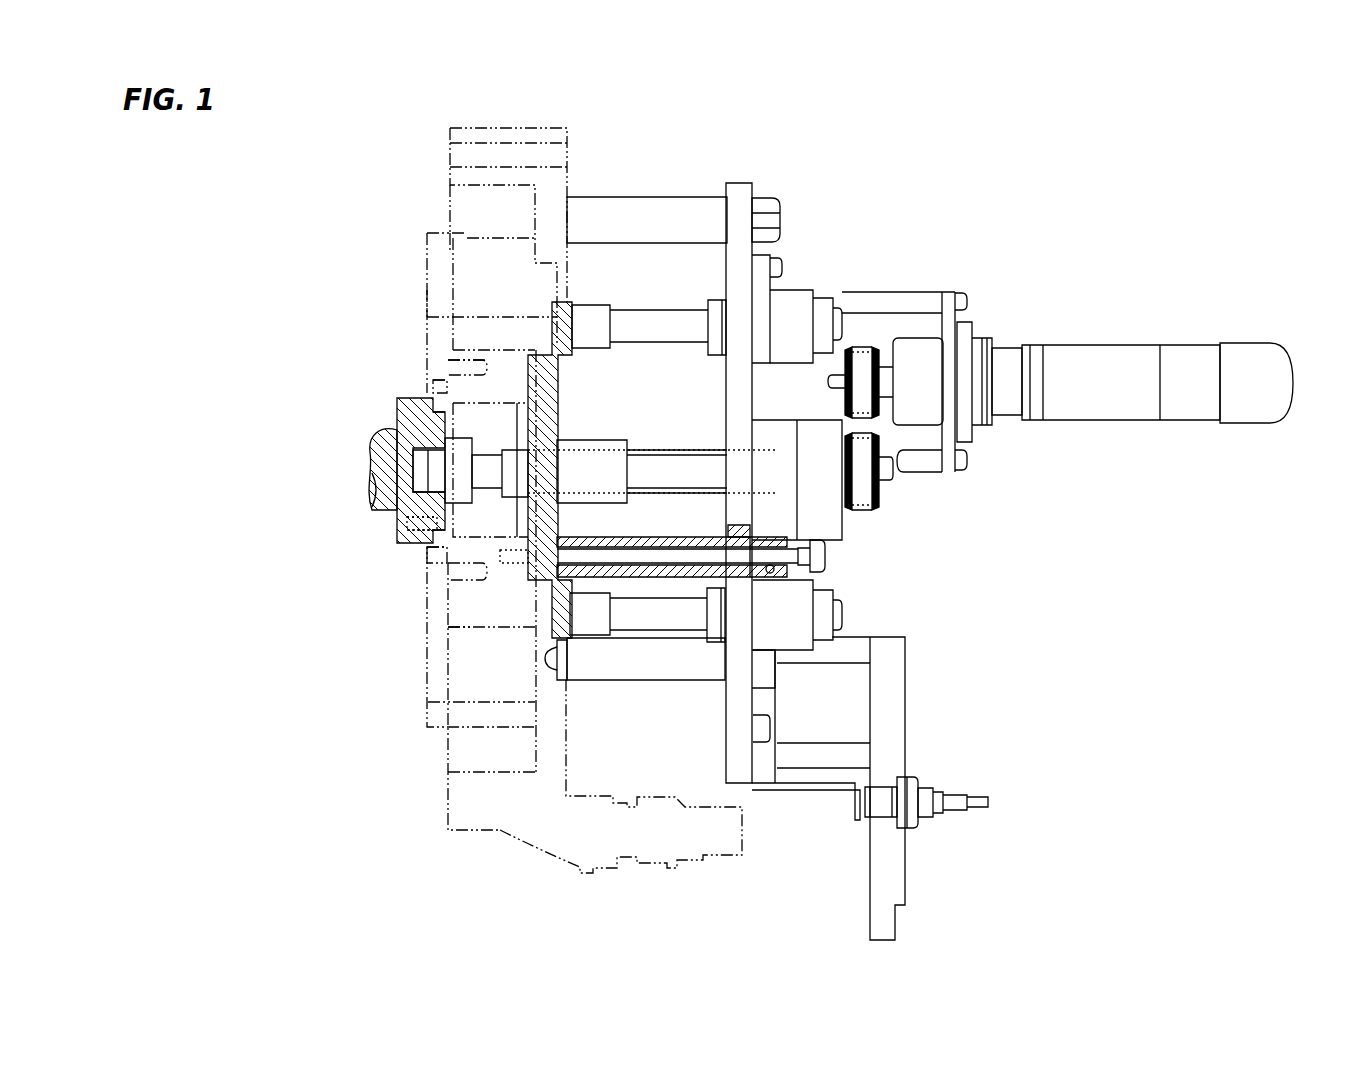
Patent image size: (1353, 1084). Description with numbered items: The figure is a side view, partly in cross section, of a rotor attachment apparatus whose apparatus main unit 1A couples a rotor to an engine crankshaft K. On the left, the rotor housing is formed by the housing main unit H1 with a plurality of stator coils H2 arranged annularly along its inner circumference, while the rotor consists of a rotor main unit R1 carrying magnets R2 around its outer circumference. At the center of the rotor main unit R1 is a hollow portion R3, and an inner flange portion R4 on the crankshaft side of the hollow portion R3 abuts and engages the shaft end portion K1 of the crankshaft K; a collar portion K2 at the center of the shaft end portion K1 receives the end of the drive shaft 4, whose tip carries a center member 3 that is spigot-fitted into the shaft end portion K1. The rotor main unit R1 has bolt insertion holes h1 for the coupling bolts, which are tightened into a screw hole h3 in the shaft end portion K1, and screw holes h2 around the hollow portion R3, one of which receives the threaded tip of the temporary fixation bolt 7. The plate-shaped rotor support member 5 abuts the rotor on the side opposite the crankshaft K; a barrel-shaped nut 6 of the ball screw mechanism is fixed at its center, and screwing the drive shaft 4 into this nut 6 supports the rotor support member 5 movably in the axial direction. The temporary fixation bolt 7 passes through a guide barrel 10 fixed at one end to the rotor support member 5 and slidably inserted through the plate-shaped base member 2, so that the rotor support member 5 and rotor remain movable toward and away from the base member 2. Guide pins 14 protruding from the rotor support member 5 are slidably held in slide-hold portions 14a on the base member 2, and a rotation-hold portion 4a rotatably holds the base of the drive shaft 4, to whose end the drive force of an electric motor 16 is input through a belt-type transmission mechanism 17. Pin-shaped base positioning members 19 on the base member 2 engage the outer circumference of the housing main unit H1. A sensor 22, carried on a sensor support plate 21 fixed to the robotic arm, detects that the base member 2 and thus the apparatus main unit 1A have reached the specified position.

The apparatus main unit 1A is at (823, 153).
The housing main unit H1 is at (450, 171).
The stator coils H2 is at (470, 258).
The rotor main unit R1 is at (445, 380).
The magnets R2 is at (465, 327).
The hollow portion R3 is at (497, 560).
The inner flange portion R4 is at (440, 400).
The crankshaft K is at (390, 443).
The shaft end portion K1 is at (403, 418).
The collar portion K2 is at (443, 417).
The center member 3 is at (440, 473).
The bolt insertion holes h1 is at (430, 527).
The screw holes h2 is at (455, 613).
The screw hole h3 is at (397, 523).
The base member 2 is at (752, 270).
The drive shaft 4 is at (690, 462).
The rotation-hold portion 4a is at (840, 524).
The rotor support member 5 is at (558, 407).
The barrel-shaped nut 6 is at (607, 441).
The temporary fixation bolt 7 is at (820, 558).
The guide barrel 10 is at (627, 577).
The guide pin 14 is at (643, 318).
The slide-hold portions 14a is at (798, 300).
The electric motor 16 is at (1110, 355).
The belt-type transmission mechanism 17 is at (880, 497).
The base positioning members 19 is at (645, 207).
The sensor support plate 21 is at (890, 687).
The sensor 22 is at (912, 780).